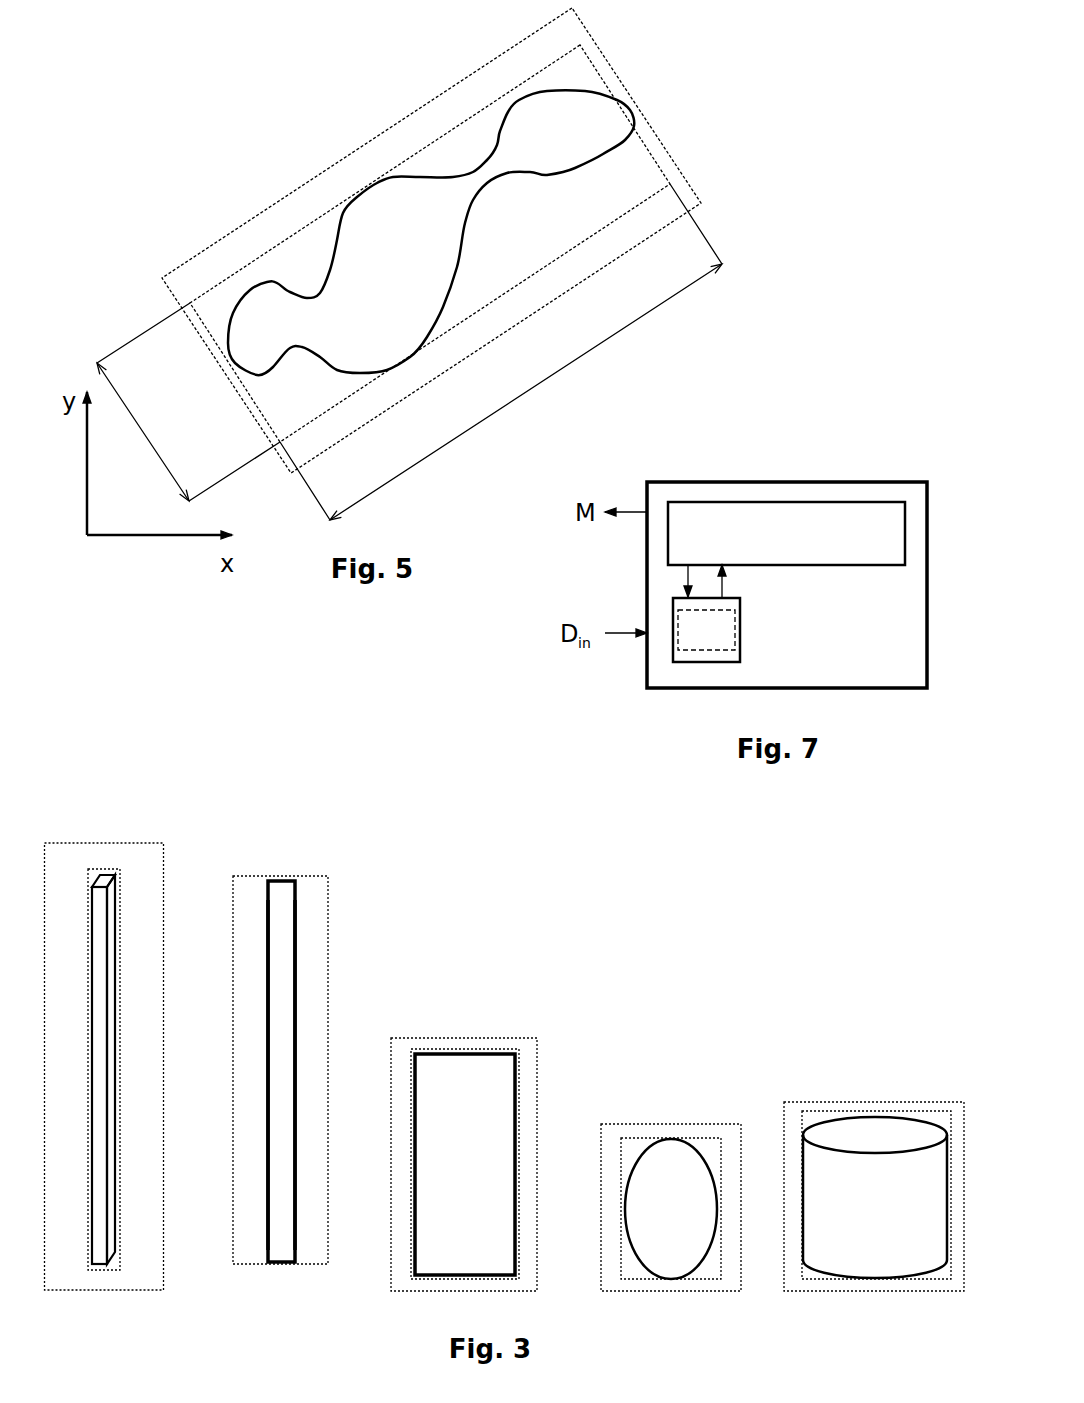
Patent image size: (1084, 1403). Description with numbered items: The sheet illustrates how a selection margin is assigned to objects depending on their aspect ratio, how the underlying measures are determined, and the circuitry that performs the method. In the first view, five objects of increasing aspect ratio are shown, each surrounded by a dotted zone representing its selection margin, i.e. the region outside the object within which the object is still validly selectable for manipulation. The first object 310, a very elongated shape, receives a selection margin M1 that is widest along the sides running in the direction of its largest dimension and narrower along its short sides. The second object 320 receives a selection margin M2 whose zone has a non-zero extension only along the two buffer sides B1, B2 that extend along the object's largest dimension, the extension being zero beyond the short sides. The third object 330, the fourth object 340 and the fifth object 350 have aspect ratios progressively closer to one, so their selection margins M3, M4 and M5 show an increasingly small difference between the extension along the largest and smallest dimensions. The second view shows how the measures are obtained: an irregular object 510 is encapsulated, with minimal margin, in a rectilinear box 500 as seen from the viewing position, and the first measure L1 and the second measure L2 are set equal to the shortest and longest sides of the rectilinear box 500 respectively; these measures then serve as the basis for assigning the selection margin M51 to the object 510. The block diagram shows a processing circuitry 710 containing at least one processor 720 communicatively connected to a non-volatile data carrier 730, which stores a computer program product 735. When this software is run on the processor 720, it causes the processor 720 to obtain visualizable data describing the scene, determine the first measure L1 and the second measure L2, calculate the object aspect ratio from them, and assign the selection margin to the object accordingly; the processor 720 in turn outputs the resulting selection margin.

In FIG. 5, the selection margin M51 is at (242, 257).
In FIG. 5, the rectilinear box 500 is at (647, 140).
In FIG. 5, the object 510 is at (468, 217).
In FIG. 5, the first measure L1 is at (188, 402).
In FIG. 5, the second measure L2 is at (501, 352).
In FIG. 7, the processing circuitry 710 is at (838, 483).
In FIG. 7, the processor 720 is at (778, 565).
In FIG. 7, the non-volatile data carrier 730 is at (702, 663).
In FIG. 7, the computer program product 735 is at (706, 630).
In FIG. 3, the selection margin M1 is at (137, 869).
In FIG. 3, the selection margin M2 is at (309, 898).
In FIG. 3, the selection margin M3 is at (495, 1038).
In FIG. 3, the selection margin M4 is at (681, 1135).
In FIG. 3, the selection margin M5 is at (852, 1104).
In FIG. 3, the first object 310 is at (106, 874).
In FIG. 3, the second object 320 is at (285, 876).
In FIG. 3, the third object 330 is at (473, 1049).
In FIG. 3, the fourth object 340 is at (670, 1139).
In FIG. 3, the fifth object 350 is at (877, 1115).
In FIG. 3, the buffer side B1 is at (268, 1038).
In FIG. 3, the buffer side B2 is at (295, 1038).